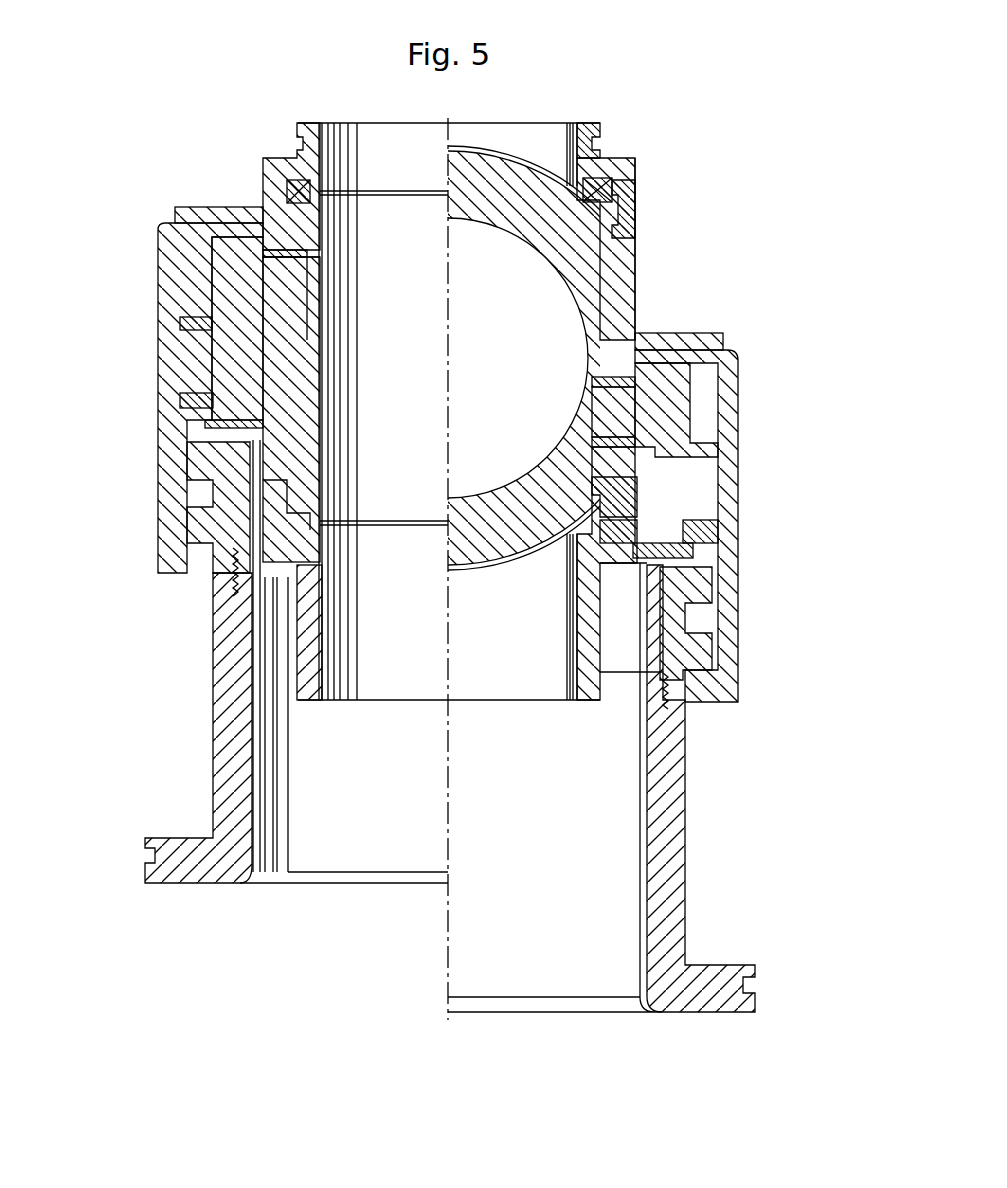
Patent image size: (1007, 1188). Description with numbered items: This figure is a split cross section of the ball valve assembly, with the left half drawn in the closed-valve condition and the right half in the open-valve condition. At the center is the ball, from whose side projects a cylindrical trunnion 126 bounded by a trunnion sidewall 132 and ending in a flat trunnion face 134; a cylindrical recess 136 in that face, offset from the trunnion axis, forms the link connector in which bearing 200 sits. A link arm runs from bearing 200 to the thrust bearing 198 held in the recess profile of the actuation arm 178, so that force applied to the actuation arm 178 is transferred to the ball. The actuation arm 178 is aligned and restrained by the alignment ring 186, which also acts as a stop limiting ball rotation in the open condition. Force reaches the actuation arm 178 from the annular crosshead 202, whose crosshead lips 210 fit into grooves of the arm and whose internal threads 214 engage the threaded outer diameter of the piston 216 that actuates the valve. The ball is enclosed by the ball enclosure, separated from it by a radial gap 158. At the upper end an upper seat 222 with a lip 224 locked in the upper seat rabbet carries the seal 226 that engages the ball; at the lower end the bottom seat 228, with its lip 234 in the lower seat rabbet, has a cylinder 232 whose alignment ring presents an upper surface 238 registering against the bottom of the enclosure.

The upper seat 222 is at (172, 157).
The bearing 200 is at (268, 170).
The alignment ring 186 is at (203, 207).
The thrust bearing 198 is at (192, 320).
The crosshead 202 is at (183, 461).
The threads 214 is at (248, 588).
The cylinder 232 is at (297, 663).
The bottom seat 228 is at (298, 717).
The gap 158 is at (524, 162).
The lip 224 is at (602, 128).
The seal 226 is at (614, 196).
The trunnion sidewall 132 is at (626, 236).
The trunnion 126 is at (625, 243).
The trunnion face 134 is at (640, 272).
The cylindrical recess 136 is at (603, 377).
The actuation arm 178 is at (740, 372).
The lip 234 is at (602, 527).
The upper surface 238 is at (655, 545).
The crosshead lip 210 is at (705, 582).
The piston 216 is at (690, 780).